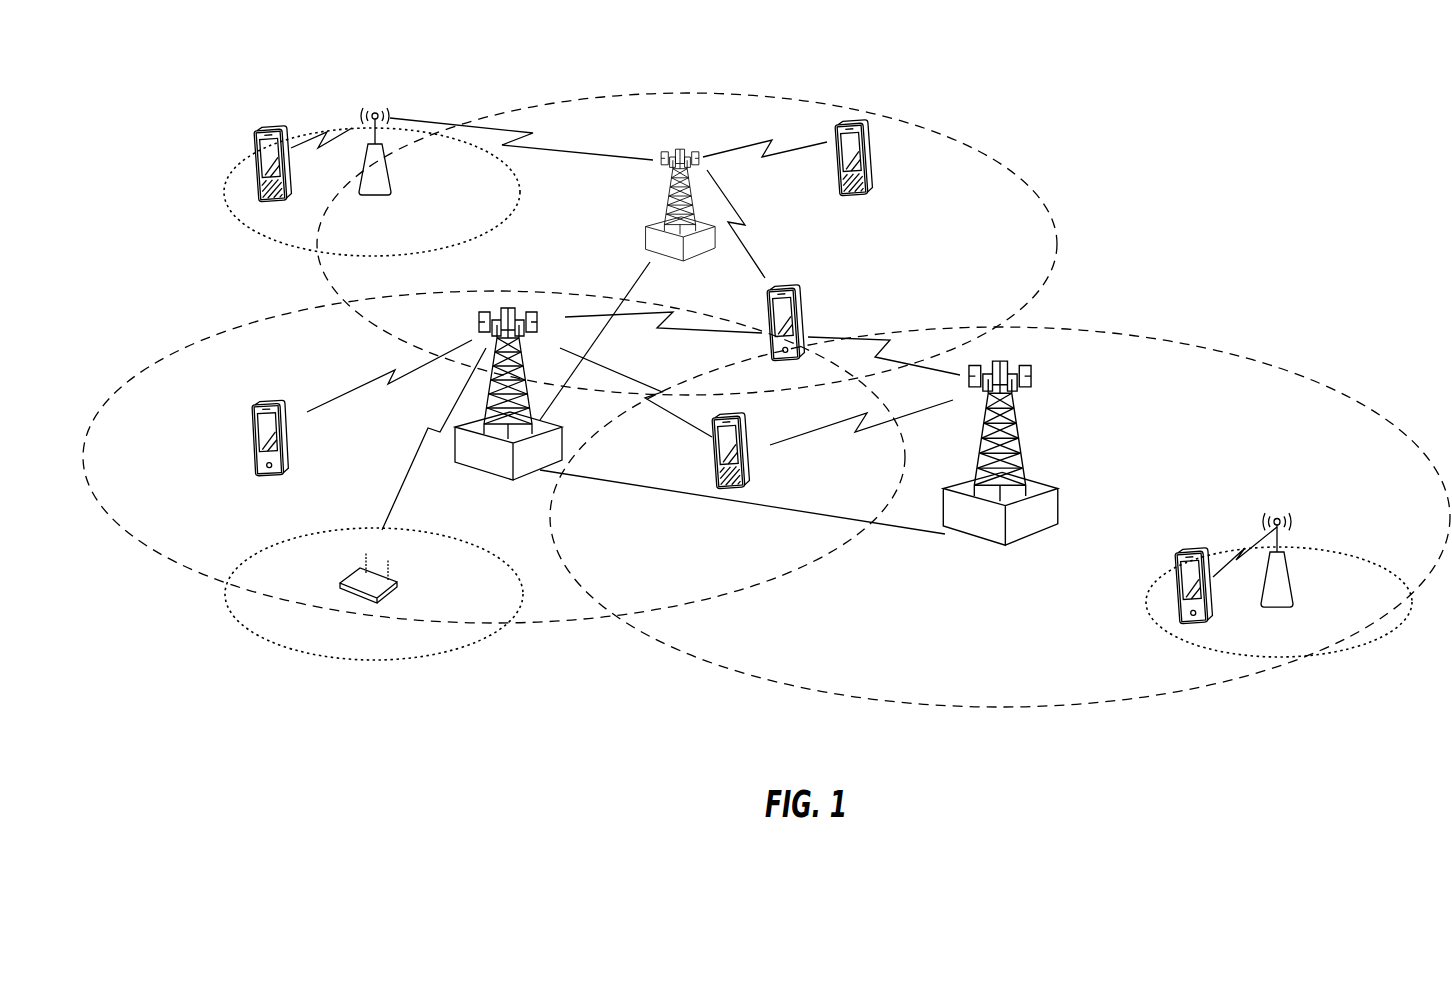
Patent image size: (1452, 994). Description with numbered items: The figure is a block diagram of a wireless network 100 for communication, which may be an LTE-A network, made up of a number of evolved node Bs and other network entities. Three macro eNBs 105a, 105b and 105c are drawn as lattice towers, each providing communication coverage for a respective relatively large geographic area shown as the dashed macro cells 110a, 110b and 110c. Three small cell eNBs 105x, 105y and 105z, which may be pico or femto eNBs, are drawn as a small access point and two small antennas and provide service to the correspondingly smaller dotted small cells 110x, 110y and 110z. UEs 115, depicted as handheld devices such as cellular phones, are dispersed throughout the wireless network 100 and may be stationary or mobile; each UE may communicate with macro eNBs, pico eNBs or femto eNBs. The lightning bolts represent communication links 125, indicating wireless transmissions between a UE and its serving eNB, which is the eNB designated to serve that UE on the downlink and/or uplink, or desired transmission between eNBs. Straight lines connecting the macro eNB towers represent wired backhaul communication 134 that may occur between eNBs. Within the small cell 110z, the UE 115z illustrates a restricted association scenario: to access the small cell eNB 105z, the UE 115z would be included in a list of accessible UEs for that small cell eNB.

The wireless network 100 is at (1172, 162).
The macro eNB 105a is at (490, 478).
The macro eNB 105b is at (650, 240).
The macro eNB 105c is at (1032, 543).
The small cell eNB 105x is at (392, 597).
The small cell eNB 105y is at (386, 192).
The small cell eNB 105z is at (1290, 604).
The macro cell 110a is at (268, 322).
The macro cell 110b is at (815, 85).
The macro cell 110c is at (1286, 352).
The small cell 110x is at (316, 657).
The small cell 110y is at (229, 208).
The small cell 110z is at (1378, 640).
The UE 115 is at (255, 148).
The UE 115z is at (1172, 556).
The communication link 125 is at (330, 130).
The wired backhaul communication 134 is at (648, 297).